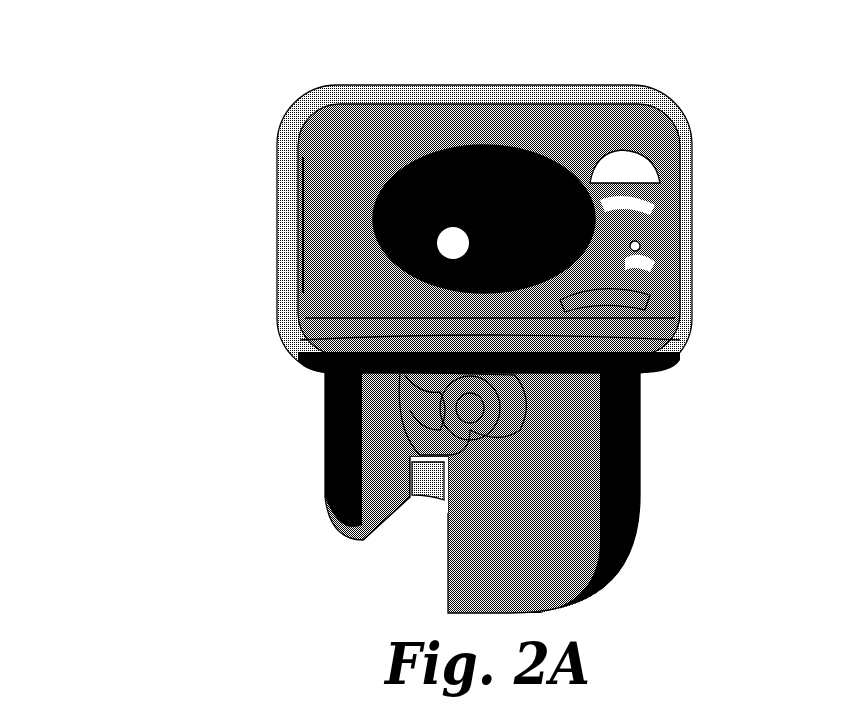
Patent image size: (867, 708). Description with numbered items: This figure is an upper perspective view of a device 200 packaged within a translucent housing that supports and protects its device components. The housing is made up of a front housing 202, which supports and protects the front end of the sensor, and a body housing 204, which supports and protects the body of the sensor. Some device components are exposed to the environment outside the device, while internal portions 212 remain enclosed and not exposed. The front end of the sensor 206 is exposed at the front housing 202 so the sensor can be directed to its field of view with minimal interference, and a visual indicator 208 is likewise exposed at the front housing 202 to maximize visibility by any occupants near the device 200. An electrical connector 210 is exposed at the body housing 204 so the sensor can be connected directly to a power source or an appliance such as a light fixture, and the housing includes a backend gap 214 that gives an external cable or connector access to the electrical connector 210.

The device 200 is at (426, 322).
The front housing 202 is at (469, 213).
The body housing 204 is at (479, 504).
The front end of the sensor 206 is at (482, 208).
The visual indicator 208 is at (640, 243).
The electrical connector 210 is at (440, 490).
The internal portions 212 is at (600, 457).
The backend gap 214 is at (404, 532).